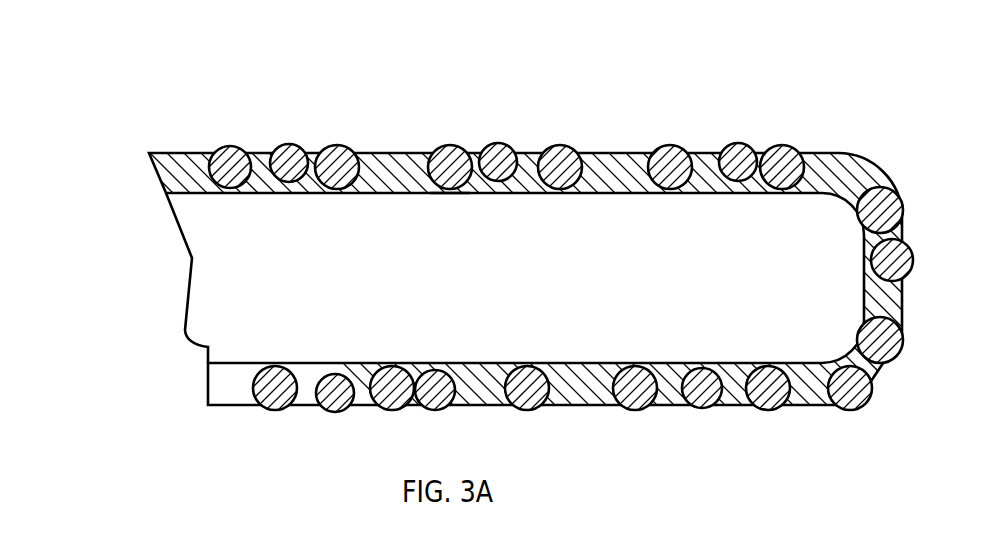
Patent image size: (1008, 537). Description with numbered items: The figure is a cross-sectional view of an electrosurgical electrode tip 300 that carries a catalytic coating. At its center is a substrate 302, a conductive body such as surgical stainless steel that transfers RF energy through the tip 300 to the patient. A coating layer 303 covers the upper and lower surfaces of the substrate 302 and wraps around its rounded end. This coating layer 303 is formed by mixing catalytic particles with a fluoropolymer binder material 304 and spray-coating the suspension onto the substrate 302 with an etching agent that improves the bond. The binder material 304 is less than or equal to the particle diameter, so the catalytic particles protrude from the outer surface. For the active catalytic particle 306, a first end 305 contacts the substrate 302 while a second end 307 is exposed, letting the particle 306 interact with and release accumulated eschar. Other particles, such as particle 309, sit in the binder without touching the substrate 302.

The tip 300 is at (504, 221).
The substrate 302 is at (527, 290).
The coating layer 303 is at (138, 175).
The binder material 304 is at (617, 170).
The first end 305 is at (448, 190).
The particle 306 is at (452, 160).
The second end 307 is at (440, 147).
The particle 309 is at (735, 163).